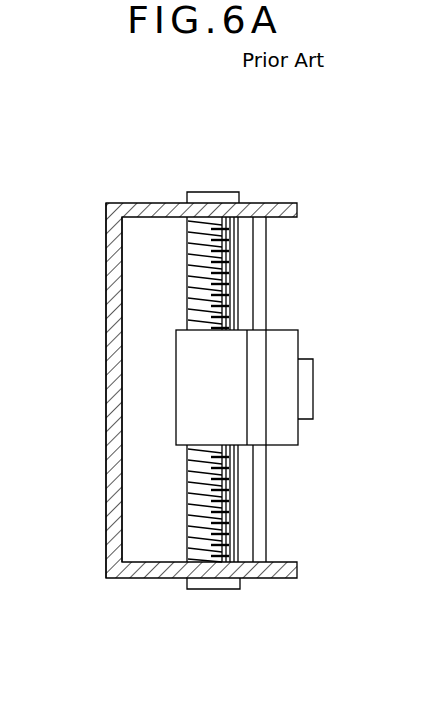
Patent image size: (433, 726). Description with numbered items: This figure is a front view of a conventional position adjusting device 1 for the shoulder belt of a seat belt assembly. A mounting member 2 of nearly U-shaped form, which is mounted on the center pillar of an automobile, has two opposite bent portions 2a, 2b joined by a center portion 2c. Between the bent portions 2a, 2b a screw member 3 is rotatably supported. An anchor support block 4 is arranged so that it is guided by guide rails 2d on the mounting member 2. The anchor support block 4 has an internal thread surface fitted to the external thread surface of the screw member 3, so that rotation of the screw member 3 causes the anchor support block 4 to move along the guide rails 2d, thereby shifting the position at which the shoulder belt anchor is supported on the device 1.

The position adjusting device 1 is at (84, 338).
The mounting member 2 is at (133, 203).
The bent portion 2a is at (270, 203).
The bent portion 2b is at (285, 578).
The center portion 2c is at (107, 458).
The guide rails 2d is at (266, 525).
The screw member 3 is at (238, 301).
The anchor support block 4 is at (234, 418).